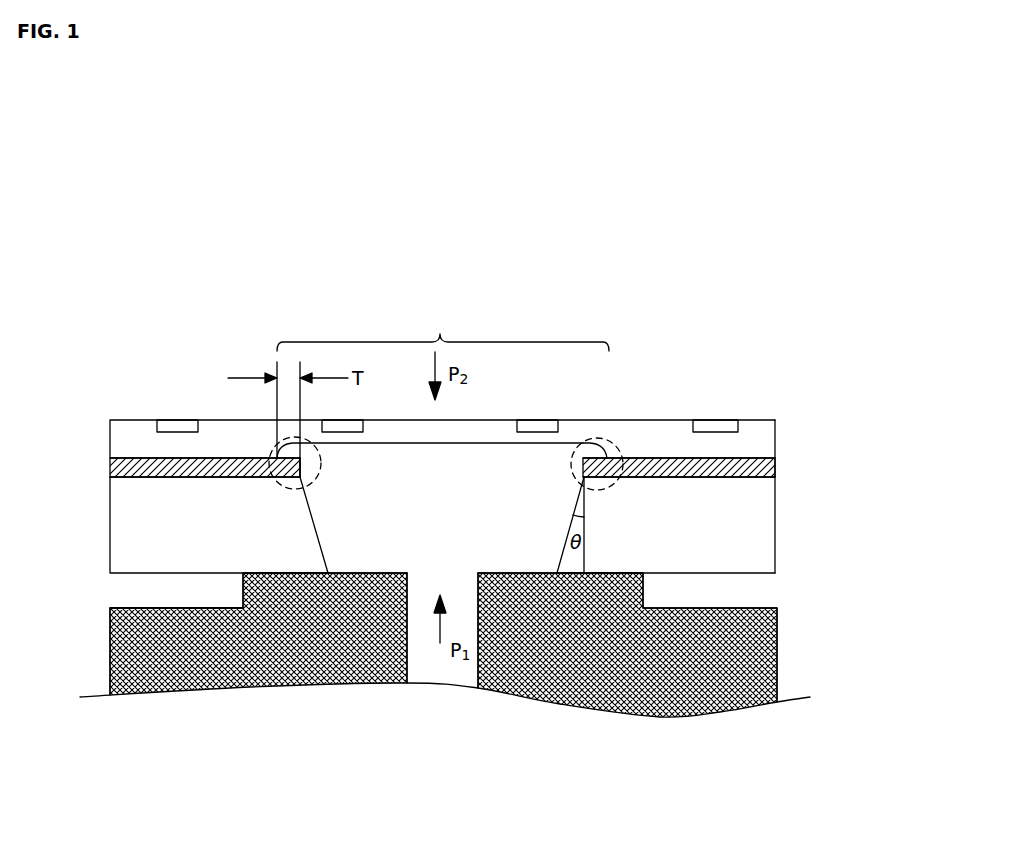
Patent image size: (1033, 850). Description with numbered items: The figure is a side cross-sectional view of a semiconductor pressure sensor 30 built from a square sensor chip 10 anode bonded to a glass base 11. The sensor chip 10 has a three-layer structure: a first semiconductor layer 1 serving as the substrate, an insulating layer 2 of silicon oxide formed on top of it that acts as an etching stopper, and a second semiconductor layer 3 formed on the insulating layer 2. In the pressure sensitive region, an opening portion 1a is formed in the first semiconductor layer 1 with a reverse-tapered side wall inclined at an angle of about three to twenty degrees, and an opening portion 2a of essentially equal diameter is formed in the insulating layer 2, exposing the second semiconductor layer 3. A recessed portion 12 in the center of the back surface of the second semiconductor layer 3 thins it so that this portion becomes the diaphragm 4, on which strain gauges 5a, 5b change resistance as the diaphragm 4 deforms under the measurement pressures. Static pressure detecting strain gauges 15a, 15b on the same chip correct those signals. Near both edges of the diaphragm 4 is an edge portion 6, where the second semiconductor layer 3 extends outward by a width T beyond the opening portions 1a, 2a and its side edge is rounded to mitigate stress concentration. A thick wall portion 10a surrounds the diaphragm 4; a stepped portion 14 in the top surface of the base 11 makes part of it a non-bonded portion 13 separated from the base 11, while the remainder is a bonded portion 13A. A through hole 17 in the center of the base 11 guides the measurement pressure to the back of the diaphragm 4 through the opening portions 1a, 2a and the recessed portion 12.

The first semiconductor layer 1 is at (122, 540).
The opening portion 1a is at (327, 558).
The insulating layer 2 is at (116, 472).
The opening portion 2a is at (292, 450).
The second semiconductor layer 3 is at (118, 442).
The diaphragm 4 is at (443, 390).
The strain gauge 5a is at (340, 425).
The strain gauge 5b is at (555, 425).
The edge portion 6 is at (313, 481).
The sensor chip 10 is at (817, 422).
The thick wall portion 10a is at (766, 562).
The base 11 is at (778, 652).
The recessed portion 12 is at (512, 444).
The non-bonded portion 13 is at (766, 437).
The bonded portion 13A is at (612, 507).
The stepped portion 14 is at (125, 608).
The static pressure detecting strain gauge 15a is at (166, 421).
The static pressure detecting strain gauge 15b is at (718, 423).
The through hole 17 is at (408, 656).
The pressure sensor 30 is at (718, 283).